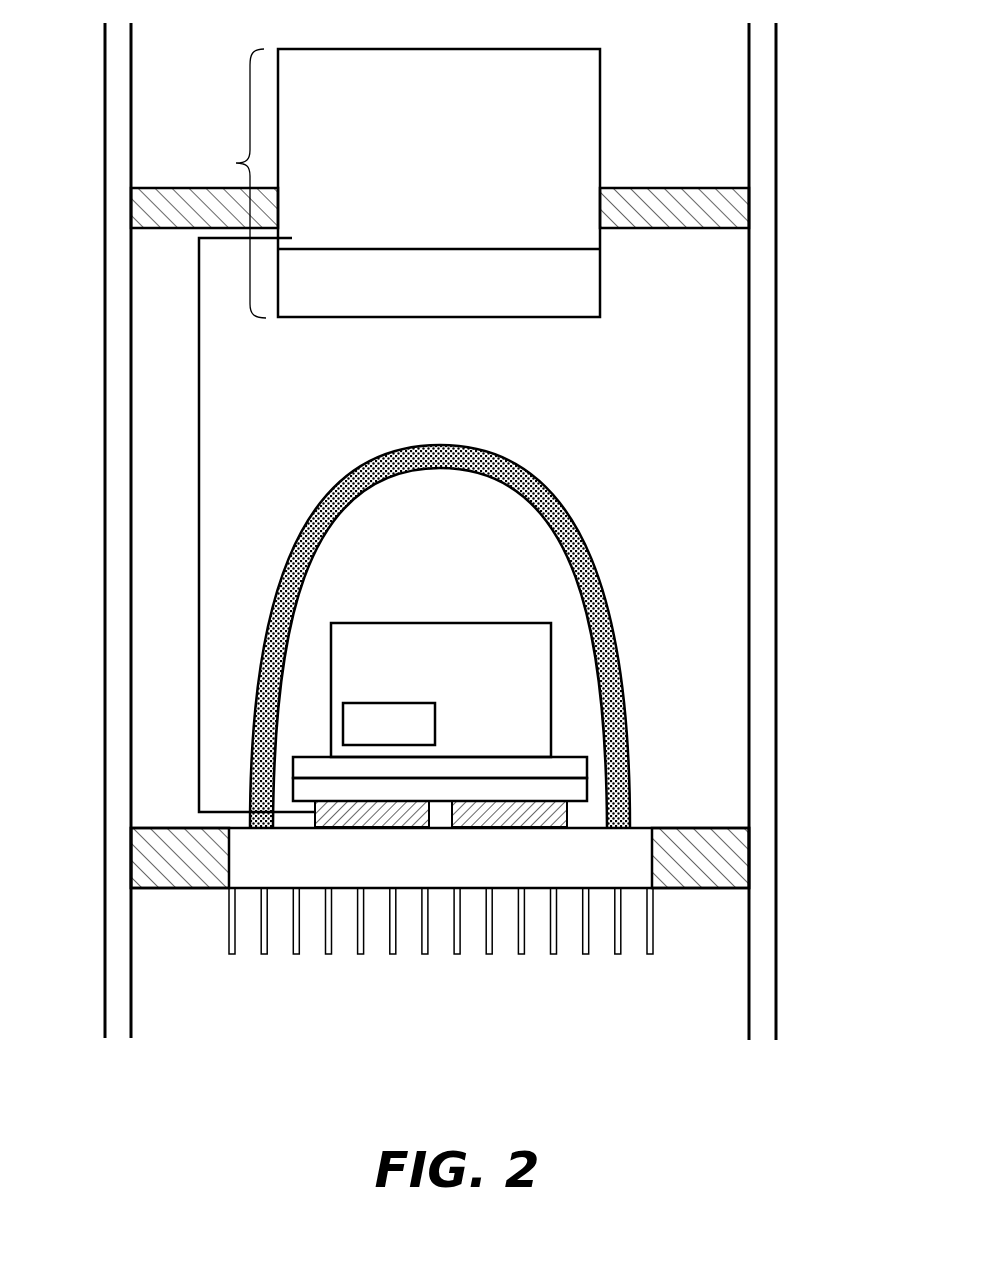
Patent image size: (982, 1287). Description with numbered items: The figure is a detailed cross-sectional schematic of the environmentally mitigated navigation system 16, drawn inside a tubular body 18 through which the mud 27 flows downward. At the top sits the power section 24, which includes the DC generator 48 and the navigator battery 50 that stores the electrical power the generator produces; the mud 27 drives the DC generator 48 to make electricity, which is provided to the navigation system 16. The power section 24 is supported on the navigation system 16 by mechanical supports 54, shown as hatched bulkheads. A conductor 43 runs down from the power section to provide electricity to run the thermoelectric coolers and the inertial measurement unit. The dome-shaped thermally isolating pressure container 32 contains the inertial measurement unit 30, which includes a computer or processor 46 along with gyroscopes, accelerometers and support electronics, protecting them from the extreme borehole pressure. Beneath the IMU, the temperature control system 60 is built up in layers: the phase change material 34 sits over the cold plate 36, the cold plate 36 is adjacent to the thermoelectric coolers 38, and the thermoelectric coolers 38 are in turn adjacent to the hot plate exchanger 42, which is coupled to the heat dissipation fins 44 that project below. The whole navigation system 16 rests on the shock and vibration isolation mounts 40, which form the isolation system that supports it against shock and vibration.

The navigation system 16 is at (441, 624).
The drill pipe / tool body 18 is at (122, 300).
The power section 24 is at (233, 183).
The mud 27 is at (163, 495).
The inertial measurement unit 30 is at (479, 673).
The thermally isolating pressure container 32 is at (543, 497).
The phase change material 34 is at (572, 770).
The cold plate 36 is at (572, 788).
The thermoelectric coolers 38 is at (508, 812).
The shock and vibration isolation mounts 40 is at (725, 862).
The hot plate exchanger 42 is at (426, 873).
The conductor 43 is at (199, 375).
The heat dissipation fins 44 is at (428, 923).
The processor 46 is at (427, 728).
The DC generator 48 is at (422, 206).
The navigator battery 50 is at (434, 318).
The mechanical supports 54 is at (672, 198).
The temperature control system 60 is at (307, 752).